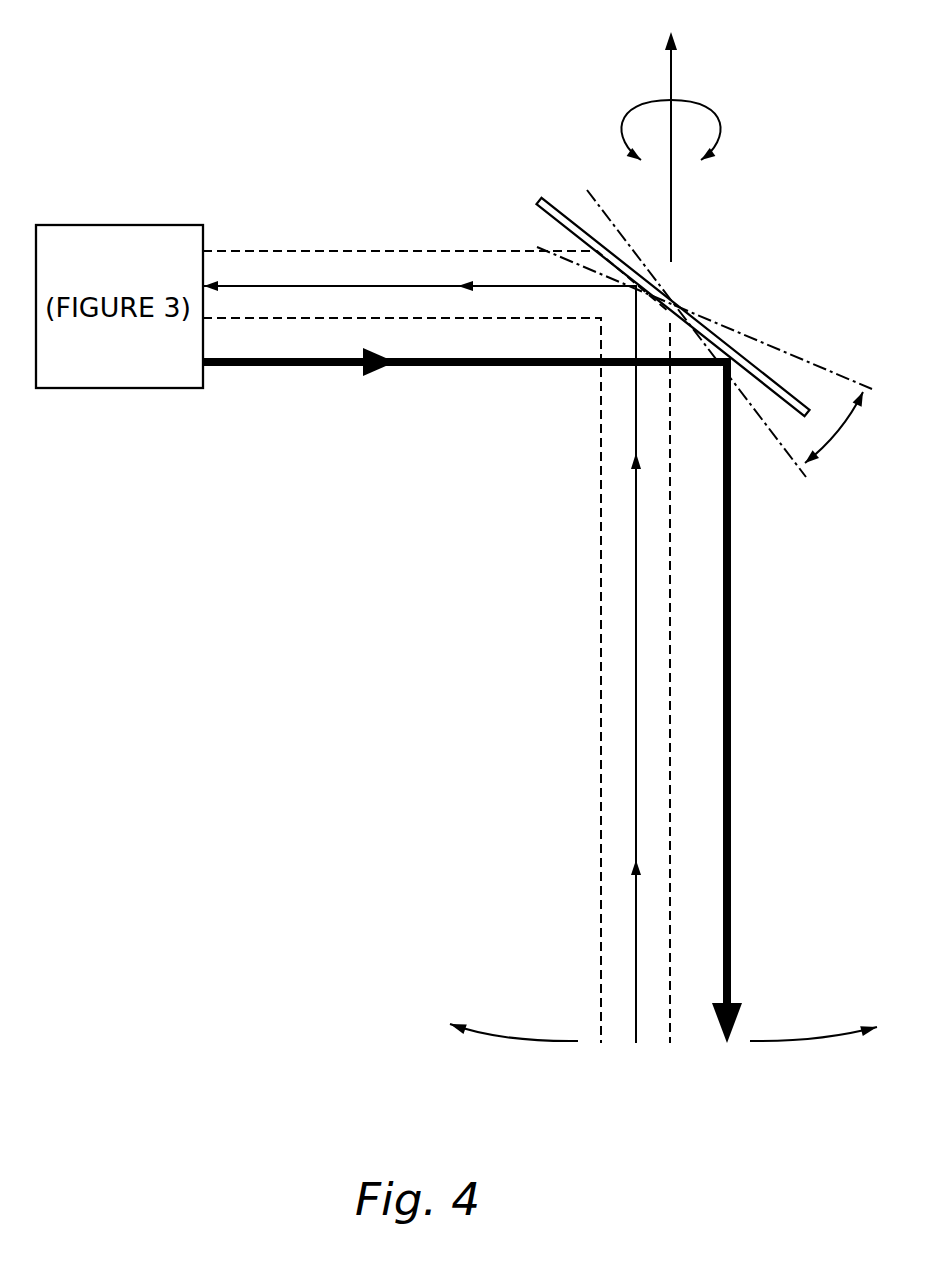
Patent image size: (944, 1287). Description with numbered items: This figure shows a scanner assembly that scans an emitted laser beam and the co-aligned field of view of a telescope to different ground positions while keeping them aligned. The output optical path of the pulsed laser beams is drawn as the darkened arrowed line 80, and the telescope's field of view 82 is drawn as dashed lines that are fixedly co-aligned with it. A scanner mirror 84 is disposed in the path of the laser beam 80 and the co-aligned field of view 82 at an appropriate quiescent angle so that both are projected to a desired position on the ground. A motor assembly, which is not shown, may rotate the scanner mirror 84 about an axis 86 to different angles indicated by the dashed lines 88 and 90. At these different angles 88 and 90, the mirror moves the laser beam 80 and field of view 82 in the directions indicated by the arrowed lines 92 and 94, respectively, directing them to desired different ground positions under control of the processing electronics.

The emitted laser beam 80 is at (308, 367).
The field of view of the telescope 82 is at (293, 250).
The scanner mirror 84 is at (570, 200).
The axis 86 is at (672, 72).
The mirror angle 88 is at (772, 438).
The mirror angle 90 is at (810, 367).
The scan direction arrowed line 92 is at (512, 1038).
The scan direction arrowed line 94 is at (813, 1040).